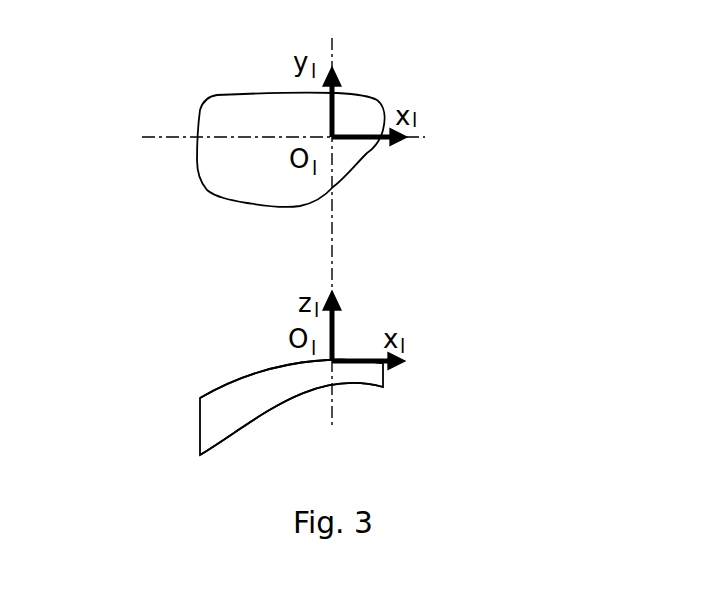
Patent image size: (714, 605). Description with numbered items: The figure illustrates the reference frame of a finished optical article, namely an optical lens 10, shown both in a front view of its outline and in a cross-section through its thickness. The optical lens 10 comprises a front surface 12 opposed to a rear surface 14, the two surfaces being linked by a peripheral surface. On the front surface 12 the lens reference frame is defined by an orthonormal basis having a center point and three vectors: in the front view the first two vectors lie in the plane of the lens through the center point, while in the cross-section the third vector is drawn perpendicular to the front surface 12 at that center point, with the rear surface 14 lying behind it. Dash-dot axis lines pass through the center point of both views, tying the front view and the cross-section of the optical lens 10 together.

The ophthalmic lens 10 is at (400, 383).
The front surface 12 is at (232, 381).
The rear surface 14 is at (230, 440).